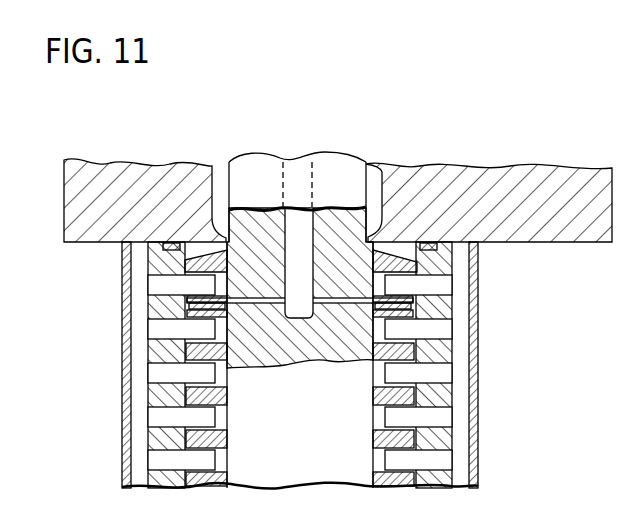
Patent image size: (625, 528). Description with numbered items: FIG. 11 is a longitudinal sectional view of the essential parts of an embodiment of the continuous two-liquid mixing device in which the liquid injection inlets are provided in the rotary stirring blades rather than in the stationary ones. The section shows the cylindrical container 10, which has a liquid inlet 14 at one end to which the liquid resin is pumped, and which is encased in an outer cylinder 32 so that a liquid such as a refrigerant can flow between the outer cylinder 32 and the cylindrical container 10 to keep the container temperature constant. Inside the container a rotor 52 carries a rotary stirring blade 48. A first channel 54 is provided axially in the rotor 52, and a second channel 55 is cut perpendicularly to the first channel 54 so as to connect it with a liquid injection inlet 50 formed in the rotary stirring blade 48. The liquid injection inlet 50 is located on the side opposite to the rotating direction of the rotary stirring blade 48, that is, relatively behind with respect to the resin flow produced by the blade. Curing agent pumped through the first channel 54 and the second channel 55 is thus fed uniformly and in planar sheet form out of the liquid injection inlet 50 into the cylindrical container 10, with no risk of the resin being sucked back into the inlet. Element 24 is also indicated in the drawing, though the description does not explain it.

The cylindrical container 10 is at (152, 441).
The liquid inlet 14 is at (372, 180).
The friction discs 24 is at (226, 397).
The outer cylinder 32 is at (480, 453).
The rotary stirring blade 48 is at (225, 301).
The liquid injection inlet 50 is at (202, 320).
The rotor 52 is at (254, 172).
The first channel 54 is at (305, 226).
The second channel 55 is at (249, 362).